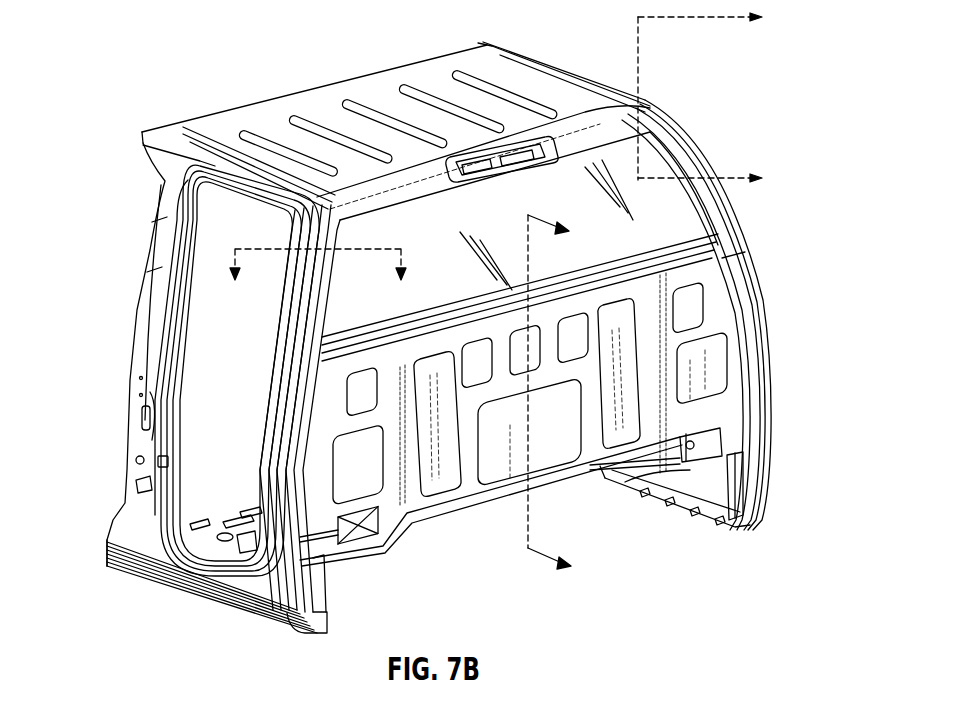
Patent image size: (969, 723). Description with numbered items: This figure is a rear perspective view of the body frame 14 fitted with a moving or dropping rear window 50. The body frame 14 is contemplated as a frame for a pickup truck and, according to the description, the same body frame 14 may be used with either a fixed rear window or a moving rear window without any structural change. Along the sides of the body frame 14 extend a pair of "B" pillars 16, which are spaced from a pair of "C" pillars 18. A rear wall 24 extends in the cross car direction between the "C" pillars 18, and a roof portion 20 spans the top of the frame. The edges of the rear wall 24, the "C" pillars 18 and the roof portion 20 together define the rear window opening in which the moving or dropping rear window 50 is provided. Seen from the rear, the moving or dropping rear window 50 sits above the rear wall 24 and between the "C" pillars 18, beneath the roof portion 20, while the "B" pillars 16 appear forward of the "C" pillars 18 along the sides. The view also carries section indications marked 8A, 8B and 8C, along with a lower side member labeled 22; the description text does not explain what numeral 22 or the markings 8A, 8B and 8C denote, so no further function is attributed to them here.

The body frame 14 is at (453, 321).
The "B" pillars 16 is at (145, 398).
The "C" pillars 18 is at (258, 462).
The roof portion 20 is at (268, 117).
The rocker 22 is at (225, 533).
The rear wall 24 is at (752, 468).
The moving or dropping rear window 50 is at (630, 178).
The section line 8A is at (719, 98).
The section line 8B is at (566, 399).
The section line 8C is at (320, 280).